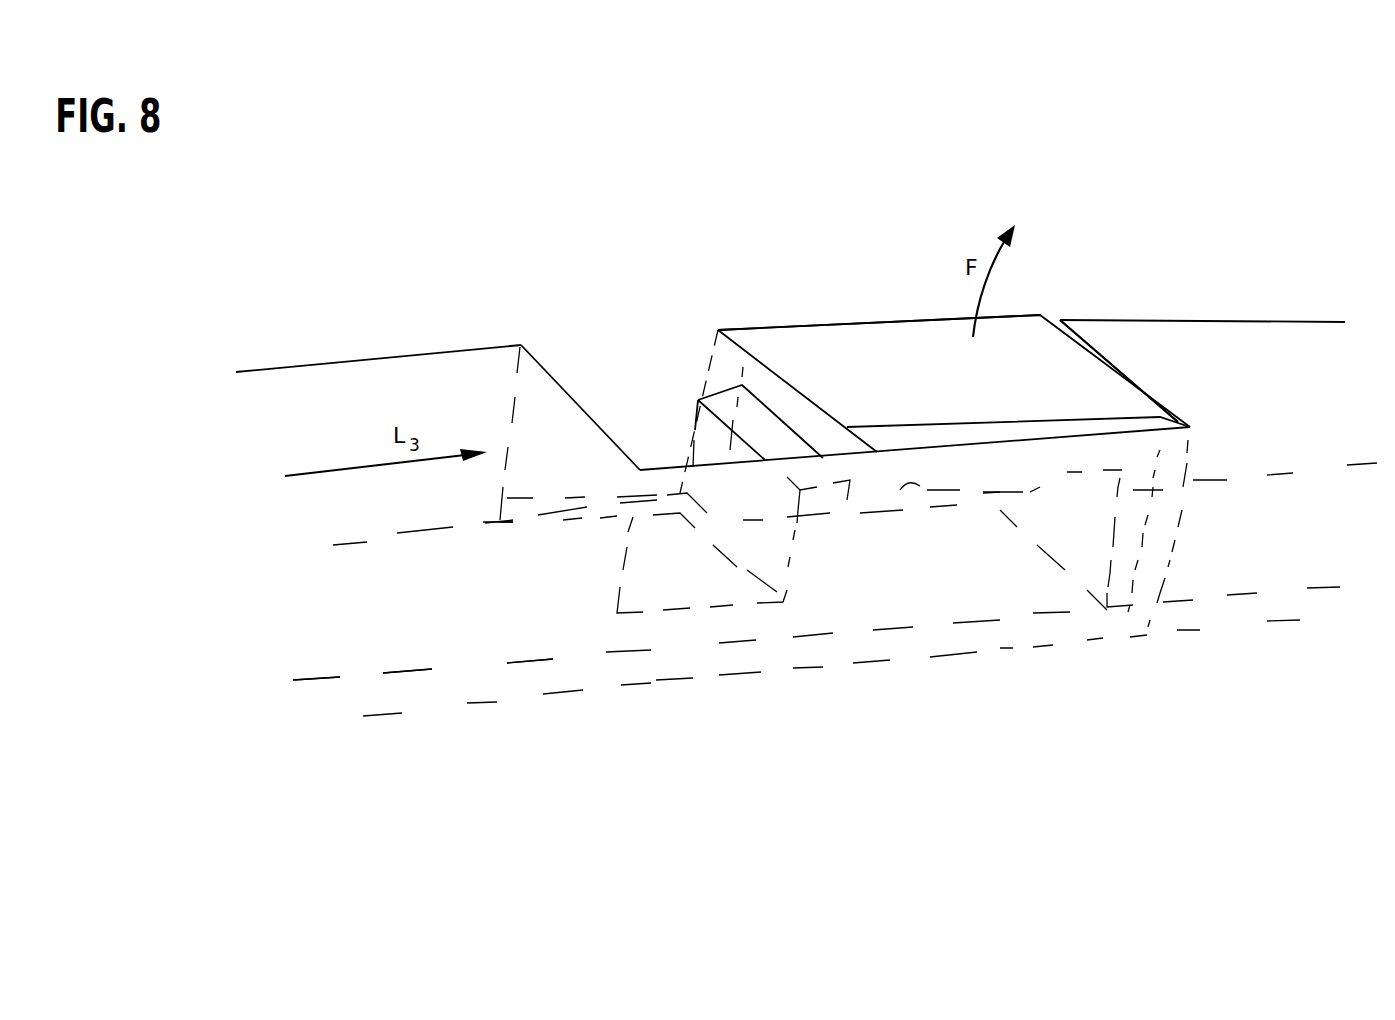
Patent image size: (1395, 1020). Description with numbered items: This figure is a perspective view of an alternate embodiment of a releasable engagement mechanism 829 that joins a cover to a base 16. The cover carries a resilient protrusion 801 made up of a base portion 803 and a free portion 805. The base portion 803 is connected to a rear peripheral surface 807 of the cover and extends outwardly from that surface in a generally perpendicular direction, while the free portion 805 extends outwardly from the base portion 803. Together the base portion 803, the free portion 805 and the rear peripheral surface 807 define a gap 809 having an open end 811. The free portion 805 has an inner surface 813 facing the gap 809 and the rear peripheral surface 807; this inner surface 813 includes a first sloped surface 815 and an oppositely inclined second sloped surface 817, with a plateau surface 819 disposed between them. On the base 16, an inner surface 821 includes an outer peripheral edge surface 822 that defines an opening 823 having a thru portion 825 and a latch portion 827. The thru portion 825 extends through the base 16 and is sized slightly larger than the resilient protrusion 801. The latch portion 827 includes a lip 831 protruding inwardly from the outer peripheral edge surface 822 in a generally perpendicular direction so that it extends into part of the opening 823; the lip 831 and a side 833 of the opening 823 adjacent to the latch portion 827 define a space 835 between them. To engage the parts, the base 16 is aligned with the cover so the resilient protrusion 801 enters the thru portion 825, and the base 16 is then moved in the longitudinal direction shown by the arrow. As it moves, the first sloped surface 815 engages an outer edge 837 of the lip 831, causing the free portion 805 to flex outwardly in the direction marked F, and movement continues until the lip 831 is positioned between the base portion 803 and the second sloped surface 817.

The base 16 is at (345, 407).
The resilient protrusion 801 is at (1020, 314).
The base portion 803 is at (1132, 540).
The free portion 805 is at (878, 360).
The rear peripheral surface 807 is at (975, 538).
The gap 809 is at (937, 567).
The open end 811 is at (878, 486).
The inner surface 813 is at (1020, 502).
The first sloped surface 815 is at (900, 490).
The second sloped surface 817 is at (1040, 487).
The plateau surface 819 is at (938, 488).
The inner surface 821 is at (478, 703).
The outer peripheral edge surface 822 is at (423, 679).
The opening 823 is at (1135, 380).
The thru portion 825 is at (1090, 342).
The latch portion 827 is at (657, 413).
The releasable engagement mechanism 829 is at (850, 252).
The lip 831 is at (712, 444).
The side 833 is at (560, 386).
The space 835 is at (615, 407).
The outer edge 837 is at (757, 397).